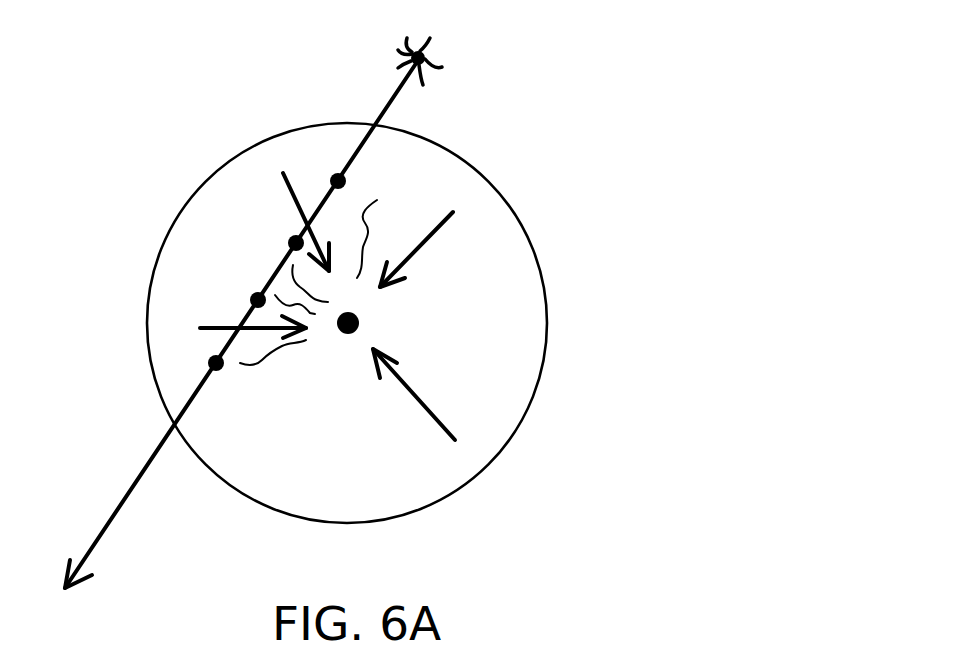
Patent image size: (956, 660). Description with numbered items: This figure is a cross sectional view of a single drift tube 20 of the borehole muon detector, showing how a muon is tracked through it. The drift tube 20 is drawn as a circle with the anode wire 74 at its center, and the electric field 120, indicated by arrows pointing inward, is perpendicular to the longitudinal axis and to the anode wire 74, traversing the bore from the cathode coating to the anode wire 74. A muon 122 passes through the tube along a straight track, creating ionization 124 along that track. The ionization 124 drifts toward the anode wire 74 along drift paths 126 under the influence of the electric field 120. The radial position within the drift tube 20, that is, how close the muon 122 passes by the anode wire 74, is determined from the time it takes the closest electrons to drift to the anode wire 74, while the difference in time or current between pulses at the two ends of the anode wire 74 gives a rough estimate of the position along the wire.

The drift tube 20 is at (546, 357).
The anode wire 74 is at (347, 335).
The electric field 120 is at (415, 392).
The muon 122 is at (425, 55).
The ionization 124 is at (296, 243).
The drift paths 126 is at (377, 200).